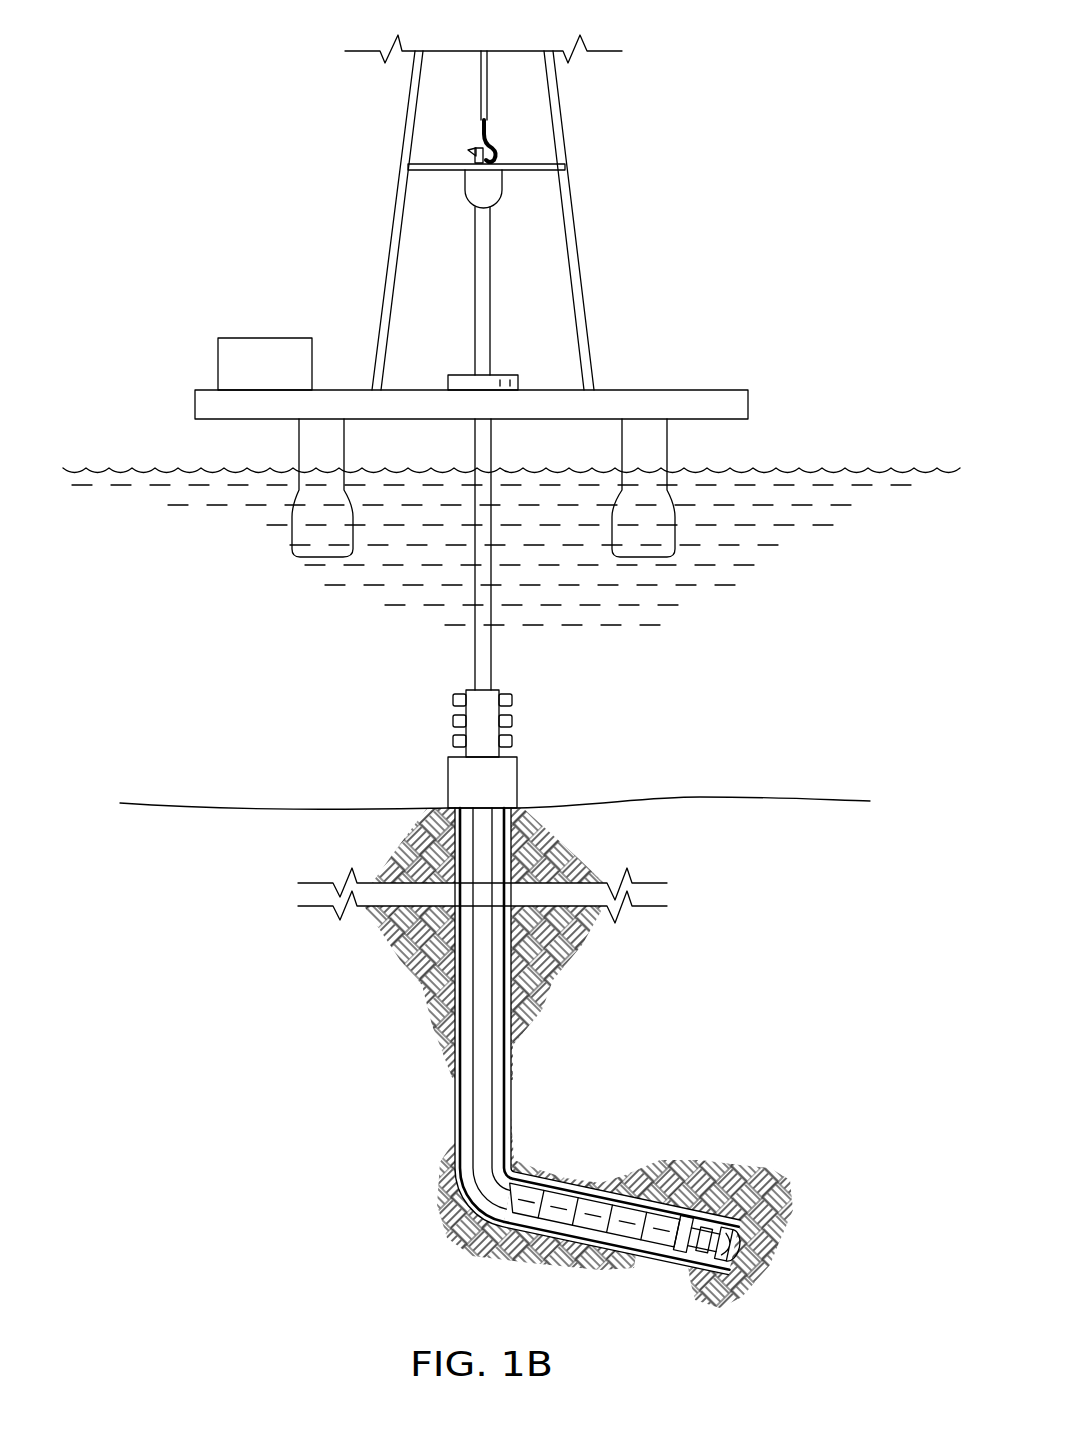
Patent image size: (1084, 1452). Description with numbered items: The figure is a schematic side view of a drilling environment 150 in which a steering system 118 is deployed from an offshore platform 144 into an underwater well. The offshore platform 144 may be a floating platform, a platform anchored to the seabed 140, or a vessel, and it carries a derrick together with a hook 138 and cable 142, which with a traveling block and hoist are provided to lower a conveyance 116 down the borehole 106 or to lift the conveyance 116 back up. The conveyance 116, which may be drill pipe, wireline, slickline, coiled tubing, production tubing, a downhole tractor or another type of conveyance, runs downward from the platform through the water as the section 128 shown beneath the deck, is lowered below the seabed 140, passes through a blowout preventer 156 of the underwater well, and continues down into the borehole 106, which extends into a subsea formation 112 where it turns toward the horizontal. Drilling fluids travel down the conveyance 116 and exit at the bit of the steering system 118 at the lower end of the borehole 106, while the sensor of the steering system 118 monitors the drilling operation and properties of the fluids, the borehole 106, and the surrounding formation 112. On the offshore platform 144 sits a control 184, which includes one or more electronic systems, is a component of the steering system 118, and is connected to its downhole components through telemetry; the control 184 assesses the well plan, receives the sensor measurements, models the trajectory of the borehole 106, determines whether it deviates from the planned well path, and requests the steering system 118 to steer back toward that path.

The drilling environment 150 is at (466, 74).
The cable 142 is at (478, 108).
The hook 138 is at (498, 146).
The control 184 is at (252, 338).
The conveyance 116 is at (474, 324).
The offshore platform 144 is at (707, 390).
The riser 128 is at (475, 436).
The blowout preventer 156 is at (552, 743).
The seabed 140 is at (680, 800).
The borehole 106 is at (505, 1070).
The formation 112 is at (670, 1121).
The steering system 118 is at (640, 1277).